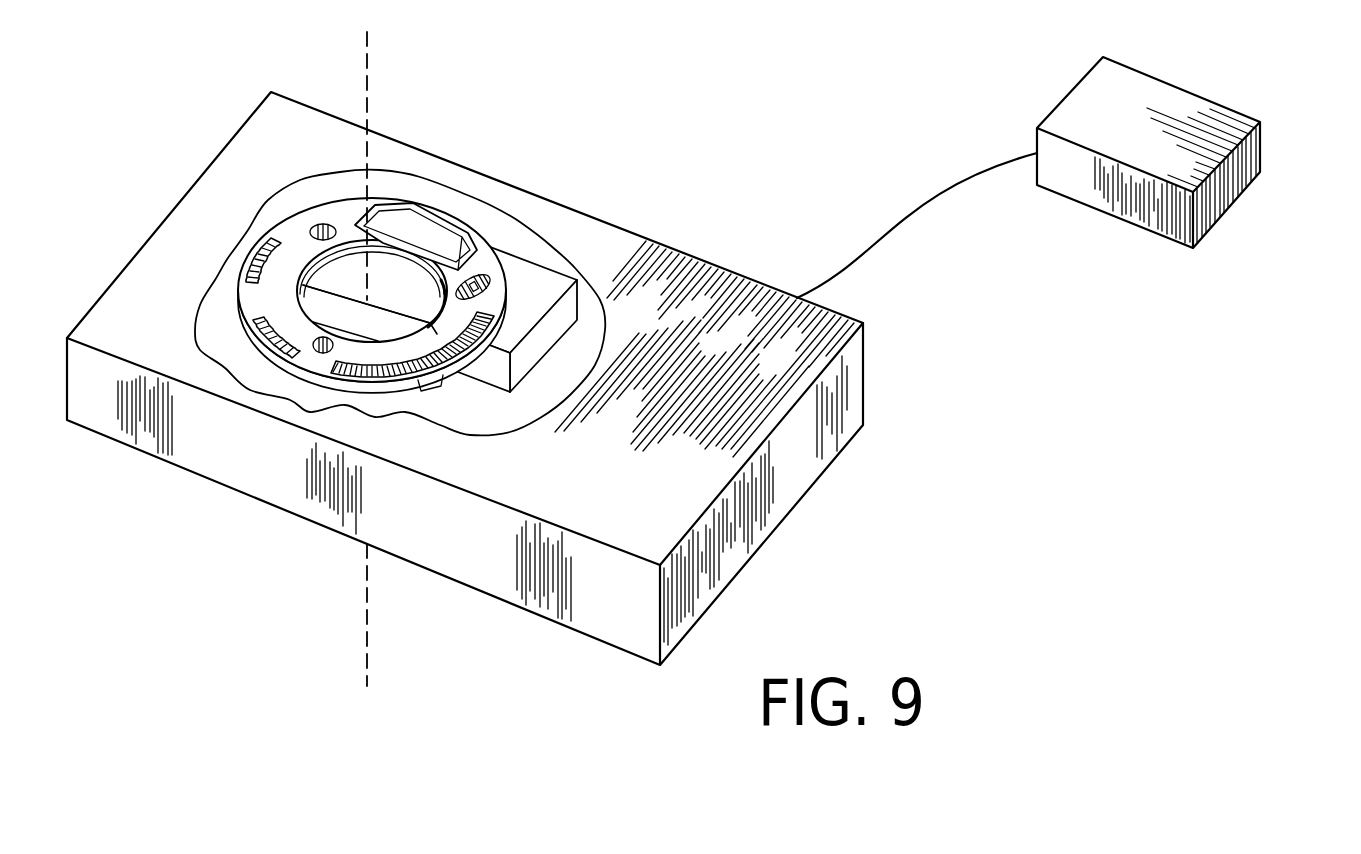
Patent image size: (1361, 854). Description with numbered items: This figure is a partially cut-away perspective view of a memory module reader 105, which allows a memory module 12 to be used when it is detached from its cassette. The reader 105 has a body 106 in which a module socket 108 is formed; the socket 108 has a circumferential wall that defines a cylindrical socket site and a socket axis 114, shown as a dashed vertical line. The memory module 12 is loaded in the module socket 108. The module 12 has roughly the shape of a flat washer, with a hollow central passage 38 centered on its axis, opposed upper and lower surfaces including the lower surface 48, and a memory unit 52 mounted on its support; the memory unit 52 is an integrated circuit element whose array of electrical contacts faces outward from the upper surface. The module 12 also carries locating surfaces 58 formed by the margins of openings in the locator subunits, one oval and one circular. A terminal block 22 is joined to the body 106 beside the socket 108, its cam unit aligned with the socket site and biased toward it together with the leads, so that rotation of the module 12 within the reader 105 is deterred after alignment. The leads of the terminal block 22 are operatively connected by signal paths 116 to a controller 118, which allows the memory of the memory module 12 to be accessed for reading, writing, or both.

The memory module 12 is at (371, 252).
The terminal block 22 is at (540, 280).
The central passage 38 is at (345, 317).
The lower surface 48 is at (371, 252).
The memory unit 52 is at (427, 227).
The locating surface 58 is at (491, 276).
The memory module reader 105 is at (710, 353).
The body 106 is at (805, 493).
The module socket 108 is at (330, 393).
The socket axis 114 is at (360, 88).
The signal paths 116 is at (921, 217).
The controller 118 is at (1240, 178).